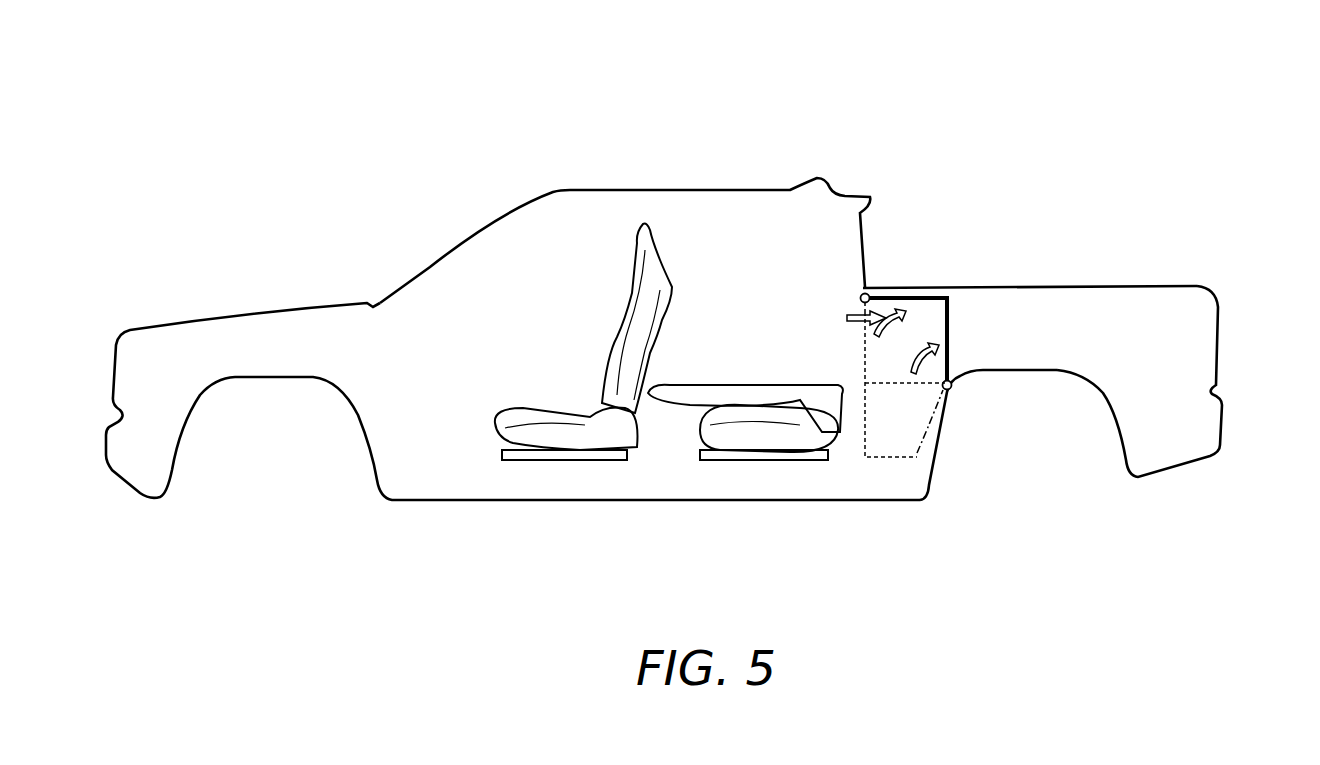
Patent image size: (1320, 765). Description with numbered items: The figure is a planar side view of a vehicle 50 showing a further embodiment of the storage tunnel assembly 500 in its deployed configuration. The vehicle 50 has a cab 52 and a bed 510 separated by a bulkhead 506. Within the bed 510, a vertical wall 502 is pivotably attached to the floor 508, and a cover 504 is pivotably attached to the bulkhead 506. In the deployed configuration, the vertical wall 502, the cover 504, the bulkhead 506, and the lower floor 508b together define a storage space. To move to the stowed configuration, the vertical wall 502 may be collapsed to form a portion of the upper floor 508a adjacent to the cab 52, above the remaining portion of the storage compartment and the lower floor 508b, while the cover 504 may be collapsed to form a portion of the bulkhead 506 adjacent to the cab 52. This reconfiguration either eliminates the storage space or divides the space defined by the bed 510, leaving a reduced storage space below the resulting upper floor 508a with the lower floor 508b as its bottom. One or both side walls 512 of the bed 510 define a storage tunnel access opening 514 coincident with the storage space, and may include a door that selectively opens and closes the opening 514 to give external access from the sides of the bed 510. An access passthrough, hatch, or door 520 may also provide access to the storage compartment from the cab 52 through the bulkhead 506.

The vehicle 50 is at (852, 130).
The cab 52 is at (662, 184).
The storage tunnel assembly 500 is at (934, 266).
The vertical wall 502 is at (947, 343).
The cover 504 is at (928, 297).
The bulkhead 506 is at (884, 364).
The floor 508 is at (1035, 424).
The upper floor 508a is at (898, 407).
The lower floor 508b is at (890, 470).
The bed 510 is at (1162, 264).
The side wall 512 is at (1138, 284).
The storage tunnel access opening 514 is at (878, 366).
The access door 520 is at (836, 343).